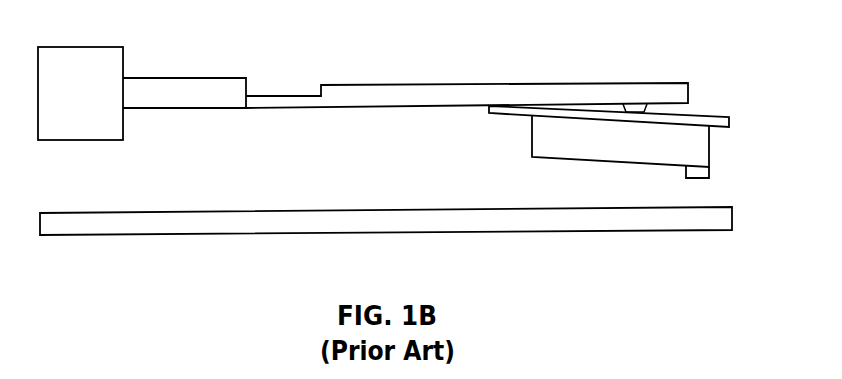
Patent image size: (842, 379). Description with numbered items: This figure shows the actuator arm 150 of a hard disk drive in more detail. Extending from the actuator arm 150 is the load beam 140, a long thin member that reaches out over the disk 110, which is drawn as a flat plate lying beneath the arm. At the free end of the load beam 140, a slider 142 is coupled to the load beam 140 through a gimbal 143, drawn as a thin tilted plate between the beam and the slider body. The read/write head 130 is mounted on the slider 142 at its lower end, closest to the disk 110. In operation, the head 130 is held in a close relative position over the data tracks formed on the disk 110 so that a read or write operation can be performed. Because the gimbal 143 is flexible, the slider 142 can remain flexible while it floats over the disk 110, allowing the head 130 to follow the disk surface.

The disk 110 is at (185, 213).
The read/write head 130 is at (710, 172).
The load beam 140 is at (440, 85).
The slider 142 is at (710, 146).
The gimbal 143 is at (709, 114).
The actuator arm 150 is at (185, 78).